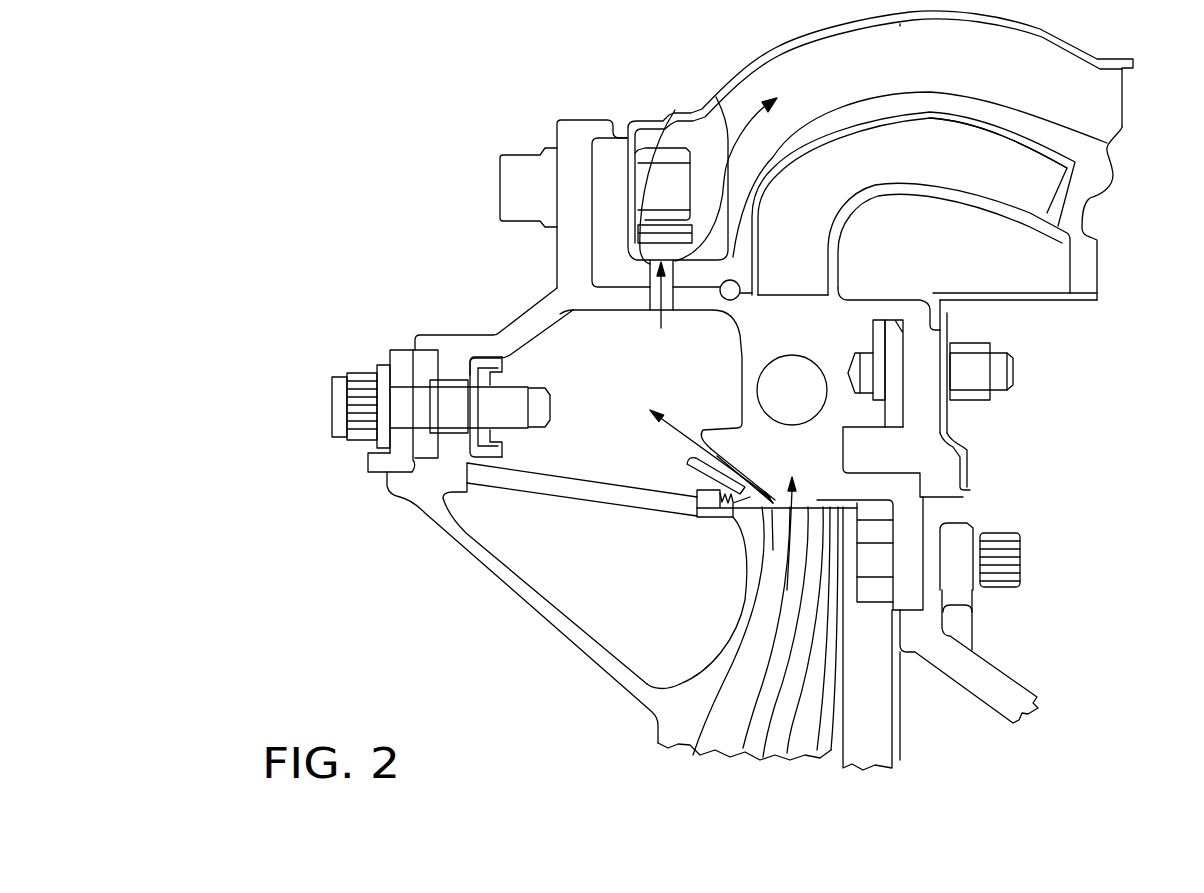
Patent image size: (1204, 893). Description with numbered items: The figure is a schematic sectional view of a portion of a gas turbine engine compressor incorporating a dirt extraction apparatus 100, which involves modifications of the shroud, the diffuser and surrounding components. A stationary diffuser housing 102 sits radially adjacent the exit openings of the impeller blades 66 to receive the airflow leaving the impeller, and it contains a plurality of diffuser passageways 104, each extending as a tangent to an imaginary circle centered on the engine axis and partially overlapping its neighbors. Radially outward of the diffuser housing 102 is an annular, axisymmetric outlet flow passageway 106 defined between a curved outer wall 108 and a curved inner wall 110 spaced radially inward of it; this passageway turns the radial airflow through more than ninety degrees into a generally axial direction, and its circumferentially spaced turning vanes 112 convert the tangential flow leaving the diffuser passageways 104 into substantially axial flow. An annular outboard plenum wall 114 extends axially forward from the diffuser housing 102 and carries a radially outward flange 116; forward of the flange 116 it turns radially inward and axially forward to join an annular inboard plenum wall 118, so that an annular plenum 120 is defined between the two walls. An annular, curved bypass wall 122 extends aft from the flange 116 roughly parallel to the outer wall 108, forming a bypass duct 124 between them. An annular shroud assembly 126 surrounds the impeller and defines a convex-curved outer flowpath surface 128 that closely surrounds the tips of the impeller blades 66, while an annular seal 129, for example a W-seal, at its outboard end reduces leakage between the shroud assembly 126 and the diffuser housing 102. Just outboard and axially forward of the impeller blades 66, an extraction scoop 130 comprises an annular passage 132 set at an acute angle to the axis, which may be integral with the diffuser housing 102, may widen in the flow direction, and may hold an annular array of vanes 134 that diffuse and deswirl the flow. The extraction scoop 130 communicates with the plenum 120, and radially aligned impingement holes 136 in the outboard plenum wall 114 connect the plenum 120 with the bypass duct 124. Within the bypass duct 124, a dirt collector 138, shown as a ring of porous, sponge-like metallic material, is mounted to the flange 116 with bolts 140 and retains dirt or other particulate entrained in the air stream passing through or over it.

The impeller blades 66 is at (715, 745).
The dirt extraction apparatus 100 is at (436, 112).
The diffuser housing 102 is at (850, 353).
The diffuser passageways 104 is at (810, 405).
The outlet flow passageway 106 is at (922, 163).
The outer wall 108 is at (1012, 143).
The inner wall 110 is at (978, 196).
The turning vanes 112 is at (1105, 197).
The outboard plenum wall 114 is at (608, 302).
The flange 116 is at (580, 120).
The inboard plenum wall 118 is at (505, 576).
The plenum 120 is at (587, 452).
The bypass wall 122 is at (752, 62).
The bypass duct 124 is at (930, 58).
The shroud assembly 126 is at (665, 645).
The outer flowpath surface 128 is at (767, 580).
The annular seal 129 is at (723, 500).
The extraction scoop 130 is at (668, 476).
The passage 132 is at (718, 453).
The vanes 134 is at (715, 448).
The impingement holes 136 is at (673, 298).
The dirt collector 138 is at (648, 250).
The bolts 140 is at (522, 160).